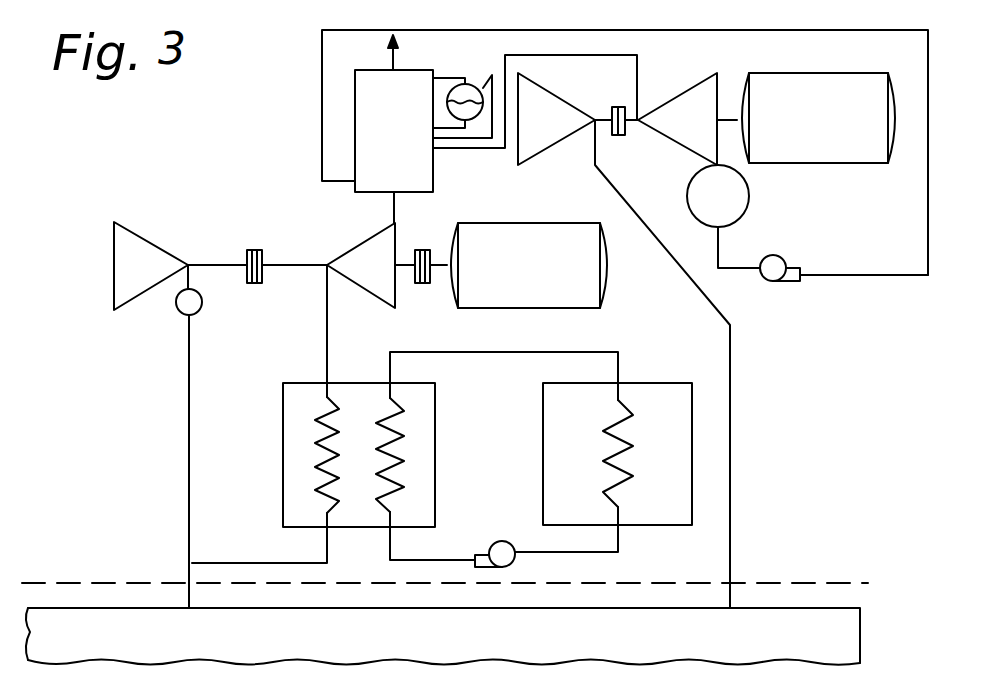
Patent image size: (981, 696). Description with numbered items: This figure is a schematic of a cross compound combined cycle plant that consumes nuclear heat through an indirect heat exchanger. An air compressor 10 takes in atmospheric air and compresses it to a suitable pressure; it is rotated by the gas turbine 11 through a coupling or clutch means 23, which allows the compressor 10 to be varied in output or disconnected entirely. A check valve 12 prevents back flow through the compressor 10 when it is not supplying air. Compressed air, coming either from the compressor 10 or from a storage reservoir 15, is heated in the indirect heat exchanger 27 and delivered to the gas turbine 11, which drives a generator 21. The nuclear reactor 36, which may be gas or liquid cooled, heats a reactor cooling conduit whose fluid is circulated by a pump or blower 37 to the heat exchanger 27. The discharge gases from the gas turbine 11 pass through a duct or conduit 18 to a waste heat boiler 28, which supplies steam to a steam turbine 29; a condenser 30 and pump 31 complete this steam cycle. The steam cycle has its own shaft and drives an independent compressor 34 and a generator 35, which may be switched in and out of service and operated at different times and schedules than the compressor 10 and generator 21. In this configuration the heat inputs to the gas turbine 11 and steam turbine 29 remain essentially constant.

The air compressor 10 is at (156, 277).
The gas turbine 11 is at (386, 277).
The check valve 12 is at (178, 312).
The storage reservoir 15 is at (456, 649).
The duct or conduit 18 is at (394, 209).
The generator 21 is at (538, 278).
The coupling or clutch means 23 is at (255, 249).
The indirect heat exchanger 27 is at (435, 452).
The waste heat boiler 28 is at (410, 150).
The steam turbine 29 is at (703, 132).
The condenser 30 is at (737, 210).
The pump 31 is at (786, 262).
The independent compressor 34 is at (562, 132).
The generator 35 is at (832, 133).
The nuclear reactor 36 is at (543, 470).
The pump or blower 37 is at (496, 546).